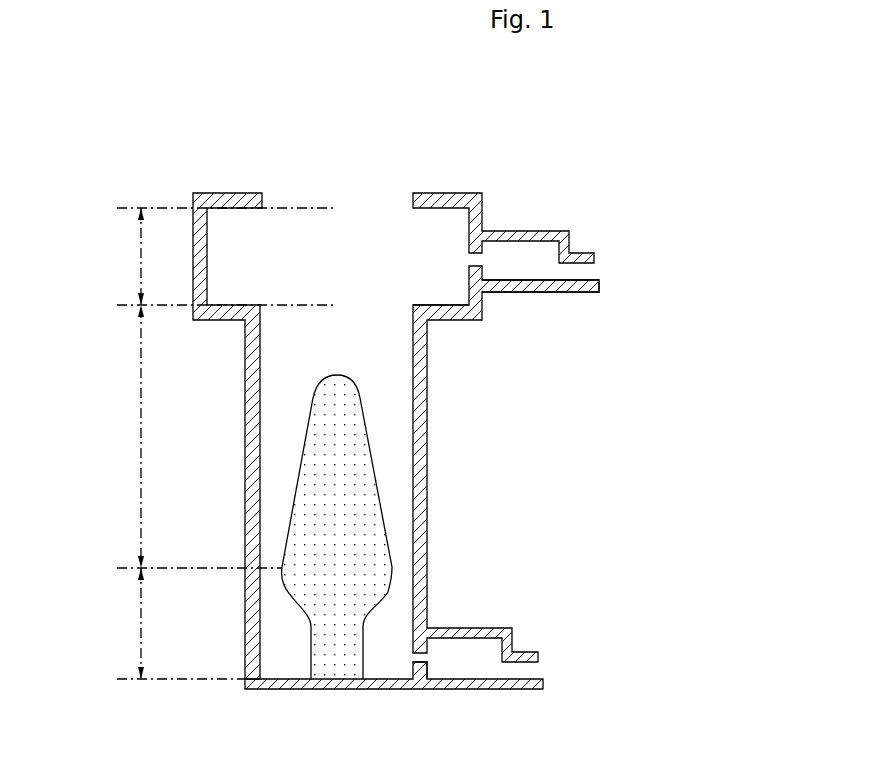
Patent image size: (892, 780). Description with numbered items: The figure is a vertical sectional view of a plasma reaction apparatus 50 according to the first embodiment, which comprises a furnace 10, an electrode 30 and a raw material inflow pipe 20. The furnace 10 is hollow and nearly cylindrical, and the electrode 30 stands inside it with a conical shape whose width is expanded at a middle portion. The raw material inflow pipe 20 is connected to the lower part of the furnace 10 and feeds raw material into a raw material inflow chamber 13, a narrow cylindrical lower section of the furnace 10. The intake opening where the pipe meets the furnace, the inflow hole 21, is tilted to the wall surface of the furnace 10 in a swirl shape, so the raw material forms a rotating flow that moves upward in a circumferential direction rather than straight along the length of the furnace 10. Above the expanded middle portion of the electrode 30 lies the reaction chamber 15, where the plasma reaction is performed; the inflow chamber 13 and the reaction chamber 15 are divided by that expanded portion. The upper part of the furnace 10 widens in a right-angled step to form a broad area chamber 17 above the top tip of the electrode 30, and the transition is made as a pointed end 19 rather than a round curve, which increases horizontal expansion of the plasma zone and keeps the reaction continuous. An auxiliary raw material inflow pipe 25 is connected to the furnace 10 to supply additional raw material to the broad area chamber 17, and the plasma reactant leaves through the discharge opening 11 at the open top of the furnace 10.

The furnace 10 is at (427, 443).
The discharge opening 11 is at (374, 207).
The raw material inflow chamber 13 is at (141, 625).
The reaction chamber 15 is at (141, 432).
The broad area chamber 17 is at (141, 268).
The pointed end 19 is at (413, 307).
The raw material inflow pipe 20 is at (475, 698).
The inflow hole 21 is at (413, 658).
The auxiliary raw material inflow pipe 25 is at (560, 302).
The electrode 30 is at (367, 542).
The plasma reaction apparatus 50 is at (524, 153).